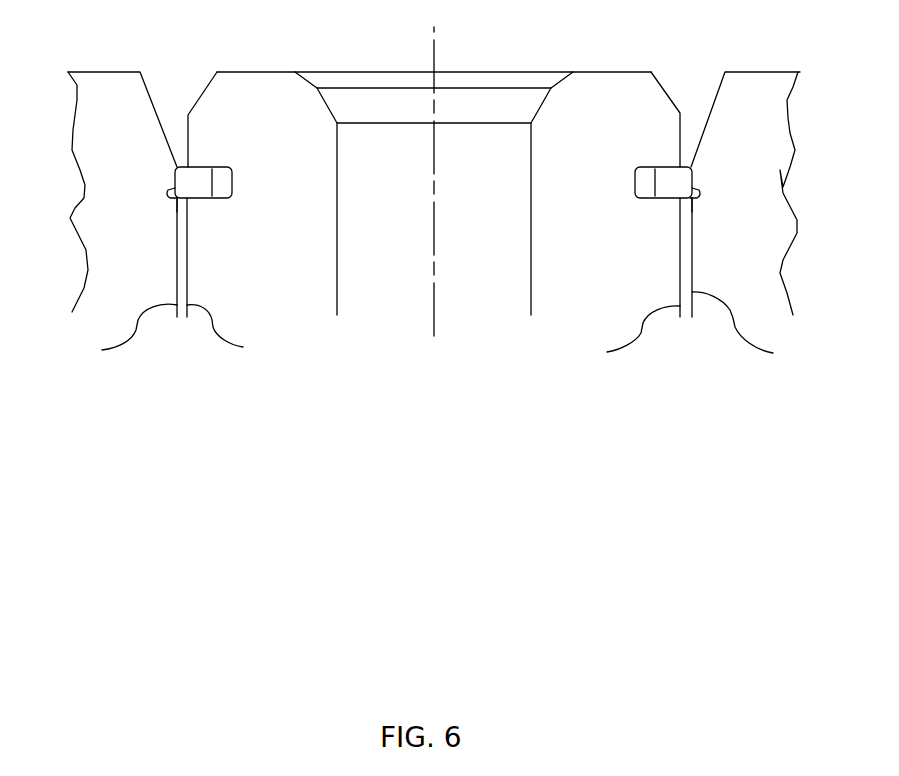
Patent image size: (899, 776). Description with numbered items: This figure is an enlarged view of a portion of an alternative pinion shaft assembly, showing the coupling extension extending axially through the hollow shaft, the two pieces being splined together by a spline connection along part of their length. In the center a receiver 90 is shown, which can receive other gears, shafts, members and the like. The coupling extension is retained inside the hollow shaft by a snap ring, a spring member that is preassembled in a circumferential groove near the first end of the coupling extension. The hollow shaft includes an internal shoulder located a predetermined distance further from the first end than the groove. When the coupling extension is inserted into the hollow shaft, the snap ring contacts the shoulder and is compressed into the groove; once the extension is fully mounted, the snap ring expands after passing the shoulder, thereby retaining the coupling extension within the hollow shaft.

The receiver 90 is at (367, 155).